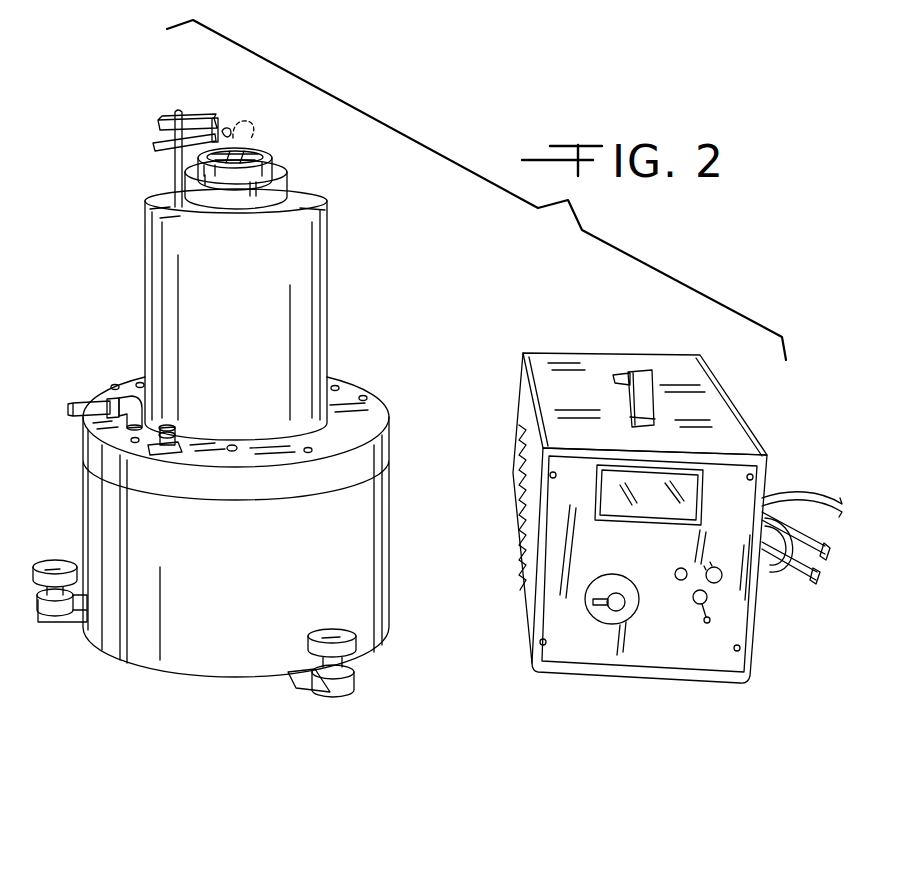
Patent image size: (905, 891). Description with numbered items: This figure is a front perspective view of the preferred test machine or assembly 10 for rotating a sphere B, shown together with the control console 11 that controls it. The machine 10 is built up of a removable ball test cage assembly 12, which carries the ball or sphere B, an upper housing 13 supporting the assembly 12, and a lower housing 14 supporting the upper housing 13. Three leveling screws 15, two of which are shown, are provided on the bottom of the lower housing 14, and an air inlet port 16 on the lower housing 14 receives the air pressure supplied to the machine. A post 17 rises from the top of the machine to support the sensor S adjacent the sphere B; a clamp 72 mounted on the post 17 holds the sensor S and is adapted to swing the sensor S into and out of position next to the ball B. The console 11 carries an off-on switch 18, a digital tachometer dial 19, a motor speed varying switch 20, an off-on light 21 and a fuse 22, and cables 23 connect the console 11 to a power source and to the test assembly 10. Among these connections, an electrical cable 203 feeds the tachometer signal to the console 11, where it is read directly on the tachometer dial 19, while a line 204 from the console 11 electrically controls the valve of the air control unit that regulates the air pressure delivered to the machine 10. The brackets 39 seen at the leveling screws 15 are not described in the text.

The test machine or assembly 10 is at (350, 352).
The control console 11 is at (705, 404).
The removable ball test cage assembly 12 is at (288, 184).
The upper housing 13 is at (338, 274).
The lower housing 14 is at (328, 521).
The leveling screws 15 is at (52, 560).
The air inlet port 16 is at (122, 395).
The post 17 is at (165, 148).
The off-on switch 18 is at (708, 612).
The digital tachometer dial 19 is at (694, 479).
The motor speed varying switch 20 is at (610, 616).
The off-on light 21 is at (678, 570).
The fuse 22 is at (722, 582).
The cables 23 is at (815, 540).
The mounting bracket 39 is at (75, 620).
The clamp 72 is at (187, 118).
The electrical cable 203 is at (838, 503).
The line 204 is at (783, 578).
The sensor S is at (226, 128).
The sphere or ball B is at (246, 124).